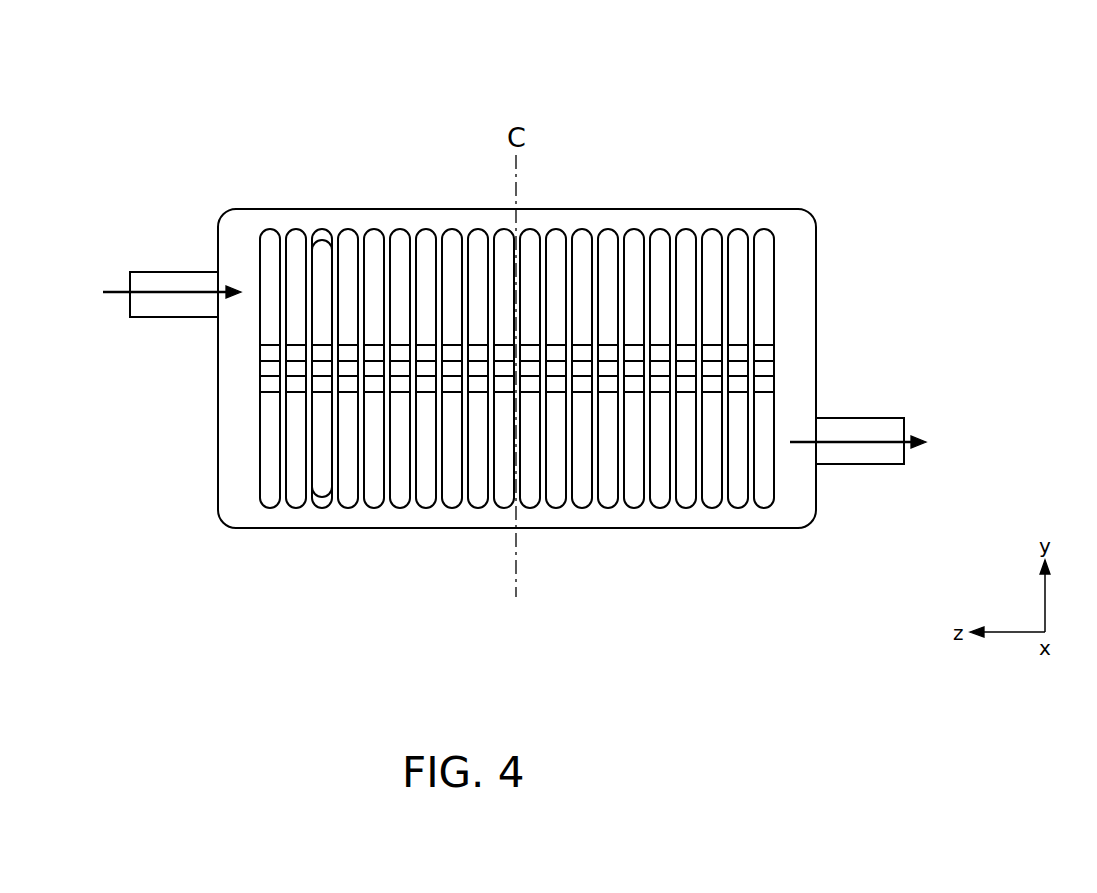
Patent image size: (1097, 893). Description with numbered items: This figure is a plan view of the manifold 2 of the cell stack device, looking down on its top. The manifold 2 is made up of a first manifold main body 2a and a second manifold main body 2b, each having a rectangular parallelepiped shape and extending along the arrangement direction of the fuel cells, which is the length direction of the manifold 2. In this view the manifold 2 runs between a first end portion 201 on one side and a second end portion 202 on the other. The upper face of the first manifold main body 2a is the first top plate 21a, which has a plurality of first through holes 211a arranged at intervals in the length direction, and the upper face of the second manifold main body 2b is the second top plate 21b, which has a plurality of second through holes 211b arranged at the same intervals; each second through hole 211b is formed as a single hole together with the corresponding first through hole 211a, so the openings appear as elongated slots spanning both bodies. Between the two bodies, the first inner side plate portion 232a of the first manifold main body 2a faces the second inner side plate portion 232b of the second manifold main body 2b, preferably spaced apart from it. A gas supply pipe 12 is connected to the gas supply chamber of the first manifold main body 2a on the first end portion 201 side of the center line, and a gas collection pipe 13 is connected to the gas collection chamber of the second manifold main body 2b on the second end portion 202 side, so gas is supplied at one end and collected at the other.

The manifold 2 is at (618, 128).
The first manifold main body 2a is at (827, 283).
The second manifold main body 2b is at (826, 480).
The gas supply pipe 12 is at (160, 272).
The gas collection pipe 13 is at (878, 418).
The first top plate 21a is at (248, 218).
The second top plate 21b is at (222, 487).
The first end portion 201 is at (248, 530).
The second end portion 202 is at (790, 530).
The first through holes 211a is at (324, 260).
The second through holes 211b is at (324, 477).
The first inner side plate portion 232a is at (452, 343).
The second inner side plate portion 232b is at (450, 393).